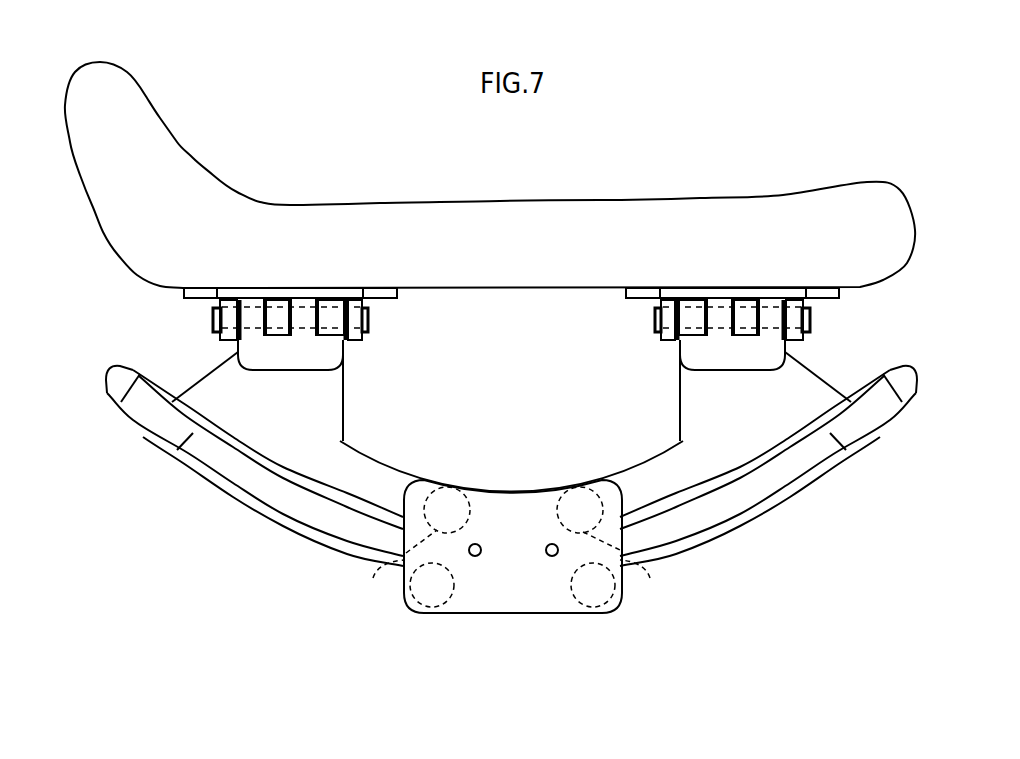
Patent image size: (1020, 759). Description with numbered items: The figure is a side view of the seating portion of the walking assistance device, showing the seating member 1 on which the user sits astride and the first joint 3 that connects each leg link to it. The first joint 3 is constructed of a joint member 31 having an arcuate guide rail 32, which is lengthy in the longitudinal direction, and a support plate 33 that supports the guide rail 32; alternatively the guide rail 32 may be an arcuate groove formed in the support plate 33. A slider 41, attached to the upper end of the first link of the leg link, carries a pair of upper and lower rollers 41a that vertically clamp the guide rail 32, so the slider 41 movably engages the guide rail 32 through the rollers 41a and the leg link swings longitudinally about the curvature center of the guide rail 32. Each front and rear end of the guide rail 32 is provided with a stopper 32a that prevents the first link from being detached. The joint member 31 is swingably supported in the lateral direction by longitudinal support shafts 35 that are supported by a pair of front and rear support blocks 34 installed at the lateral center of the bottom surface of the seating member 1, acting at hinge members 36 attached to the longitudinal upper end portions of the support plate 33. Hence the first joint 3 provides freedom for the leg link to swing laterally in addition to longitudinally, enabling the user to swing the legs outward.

The seating member 1 is at (589, 197).
The first joint 3 is at (483, 336).
The joint member 31 is at (511, 476).
The guide rail 32 is at (264, 492).
The stopper 32a is at (150, 420).
The support plate 33 is at (280, 468).
The support block 34 is at (233, 288).
The longitudinal support shaft 35 is at (337, 298).
The hinge member 36 is at (283, 313).
The slider 41 is at (509, 502).
The roller 41a is at (516, 586).